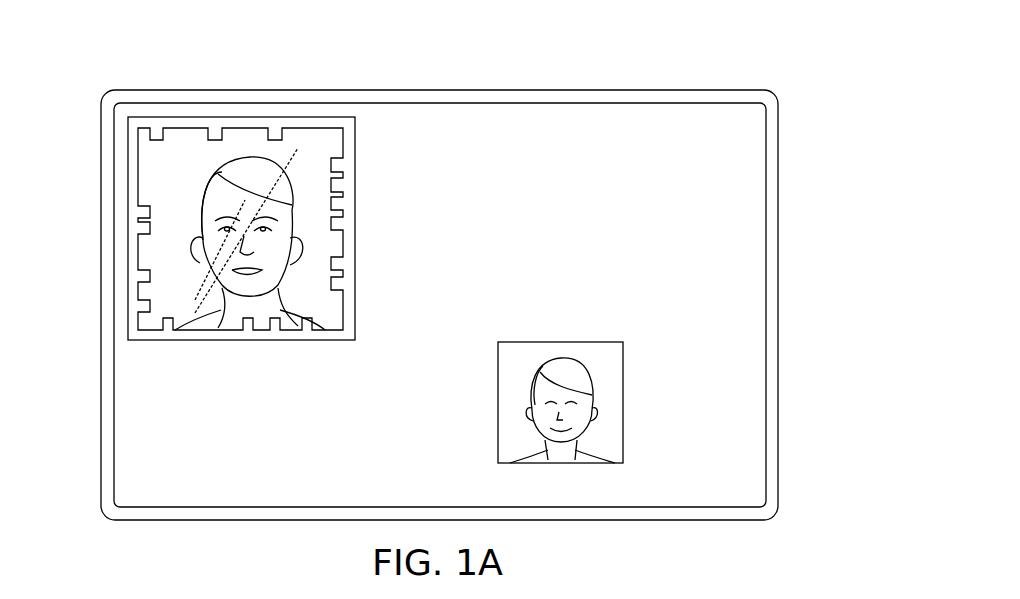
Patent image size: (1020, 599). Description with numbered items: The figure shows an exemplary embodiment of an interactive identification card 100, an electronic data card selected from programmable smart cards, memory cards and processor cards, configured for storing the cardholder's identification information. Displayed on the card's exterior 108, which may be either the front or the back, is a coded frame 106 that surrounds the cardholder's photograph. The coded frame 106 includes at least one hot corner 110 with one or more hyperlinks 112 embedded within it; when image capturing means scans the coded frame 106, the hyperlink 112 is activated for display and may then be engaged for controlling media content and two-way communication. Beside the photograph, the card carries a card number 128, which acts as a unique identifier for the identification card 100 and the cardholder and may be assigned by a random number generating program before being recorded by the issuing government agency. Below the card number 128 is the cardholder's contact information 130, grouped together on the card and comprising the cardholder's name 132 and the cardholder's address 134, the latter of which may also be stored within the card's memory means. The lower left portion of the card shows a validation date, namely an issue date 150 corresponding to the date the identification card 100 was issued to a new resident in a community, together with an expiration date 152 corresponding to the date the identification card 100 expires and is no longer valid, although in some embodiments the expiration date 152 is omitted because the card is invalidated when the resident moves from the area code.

The identification card 100 is at (457, 72).
The coded frame 106 is at (150, 325).
The card's exterior 108 is at (655, 483).
The hot corner 110 is at (333, 117).
The hyperlink 112 is at (126, 120).
The card number 128 is at (563, 153).
The cardholder's contact information 130 is at (618, 237).
The cardholder's name 132 is at (487, 233).
The cardholder's address 134 is at (641, 238).
The issue date 150 is at (160, 370).
The expiration date 152 is at (193, 433).